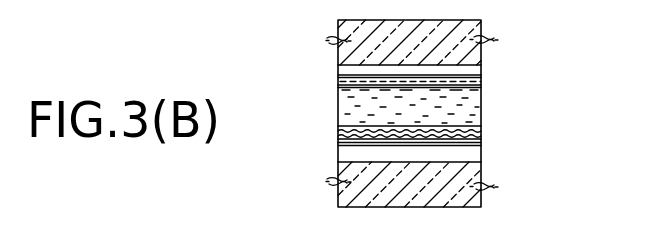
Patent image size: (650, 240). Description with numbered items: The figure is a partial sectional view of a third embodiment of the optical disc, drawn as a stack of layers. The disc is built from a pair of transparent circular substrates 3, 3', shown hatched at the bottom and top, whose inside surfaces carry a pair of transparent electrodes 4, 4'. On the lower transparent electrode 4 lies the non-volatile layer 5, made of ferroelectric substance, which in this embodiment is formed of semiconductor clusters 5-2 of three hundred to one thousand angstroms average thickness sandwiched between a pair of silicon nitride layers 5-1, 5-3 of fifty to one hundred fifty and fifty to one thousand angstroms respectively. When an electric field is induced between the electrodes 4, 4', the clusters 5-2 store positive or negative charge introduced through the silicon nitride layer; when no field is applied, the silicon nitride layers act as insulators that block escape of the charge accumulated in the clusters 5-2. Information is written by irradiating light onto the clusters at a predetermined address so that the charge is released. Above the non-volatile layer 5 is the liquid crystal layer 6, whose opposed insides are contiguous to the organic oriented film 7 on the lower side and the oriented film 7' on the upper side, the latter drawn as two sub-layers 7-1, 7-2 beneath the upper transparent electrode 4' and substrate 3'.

The transparent circular substrate 3' is at (433, 34).
The transparent electrode 4' is at (434, 54).
The oriented film layer 7-1 is at (482, 78).
The oriented film layer 7-2 is at (482, 89).
The oriented film 7' is at (466, 96).
The organic oriented film 7 is at (400, 104).
The liquid crystal layer 6 is at (482, 126).
The silicon nitride layer 5-1 is at (482, 133).
The semiconductor clusters 5-2 is at (482, 141).
The silicon nitride layer 5-3 is at (455, 153).
The non-volatile layer 5 is at (560, 131).
The transparent electrode 4 is at (422, 194).
The transparent circular substrate 3 is at (409, 198).